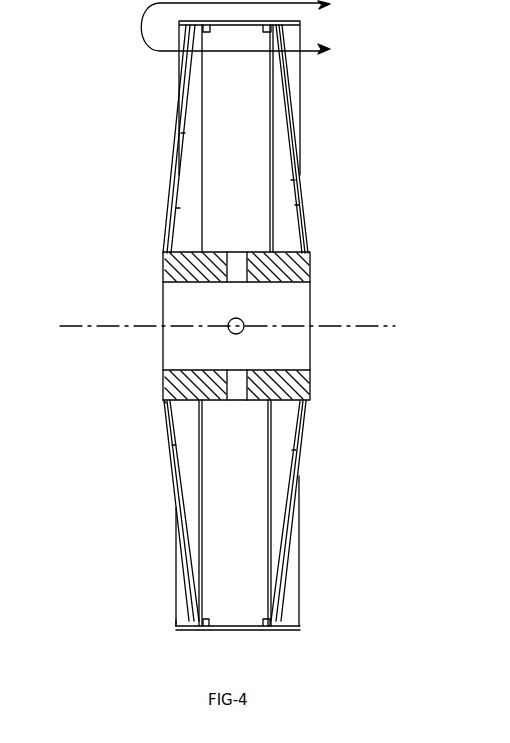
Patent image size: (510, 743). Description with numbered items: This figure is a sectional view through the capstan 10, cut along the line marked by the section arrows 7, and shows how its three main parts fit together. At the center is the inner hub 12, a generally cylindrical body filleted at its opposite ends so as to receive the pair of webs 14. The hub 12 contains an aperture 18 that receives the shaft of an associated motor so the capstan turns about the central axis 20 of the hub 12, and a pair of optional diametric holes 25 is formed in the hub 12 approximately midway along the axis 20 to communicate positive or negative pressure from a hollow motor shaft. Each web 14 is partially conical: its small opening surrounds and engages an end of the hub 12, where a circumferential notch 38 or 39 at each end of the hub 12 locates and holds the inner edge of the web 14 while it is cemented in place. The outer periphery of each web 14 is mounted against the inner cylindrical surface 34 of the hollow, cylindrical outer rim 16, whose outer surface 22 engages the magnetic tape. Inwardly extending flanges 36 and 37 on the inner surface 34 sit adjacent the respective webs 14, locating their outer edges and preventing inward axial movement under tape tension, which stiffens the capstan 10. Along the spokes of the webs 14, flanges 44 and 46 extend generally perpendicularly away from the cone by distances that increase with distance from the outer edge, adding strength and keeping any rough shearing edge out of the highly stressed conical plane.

The section line 7- 7 is at (241, 27).
The capstan 10 is at (308, 521).
The inner hub 12 is at (306, 392).
The webs 14 is at (170, 225).
The outer rim 16 is at (298, 632).
The aperture 18 is at (300, 288).
The central axis 20 is at (357, 326).
The outer surface 22 is at (283, 631).
The diametric holes 25 is at (243, 320).
The inner cylindrical surface 34 is at (176, 621).
The flange 36 is at (208, 30).
The flange 37 is at (266, 30).
The circumferential notch 38 is at (306, 252).
The circumferential notch 39 is at (165, 405).
The flange 44 is at (182, 196).
The flange 46 is at (183, 470).